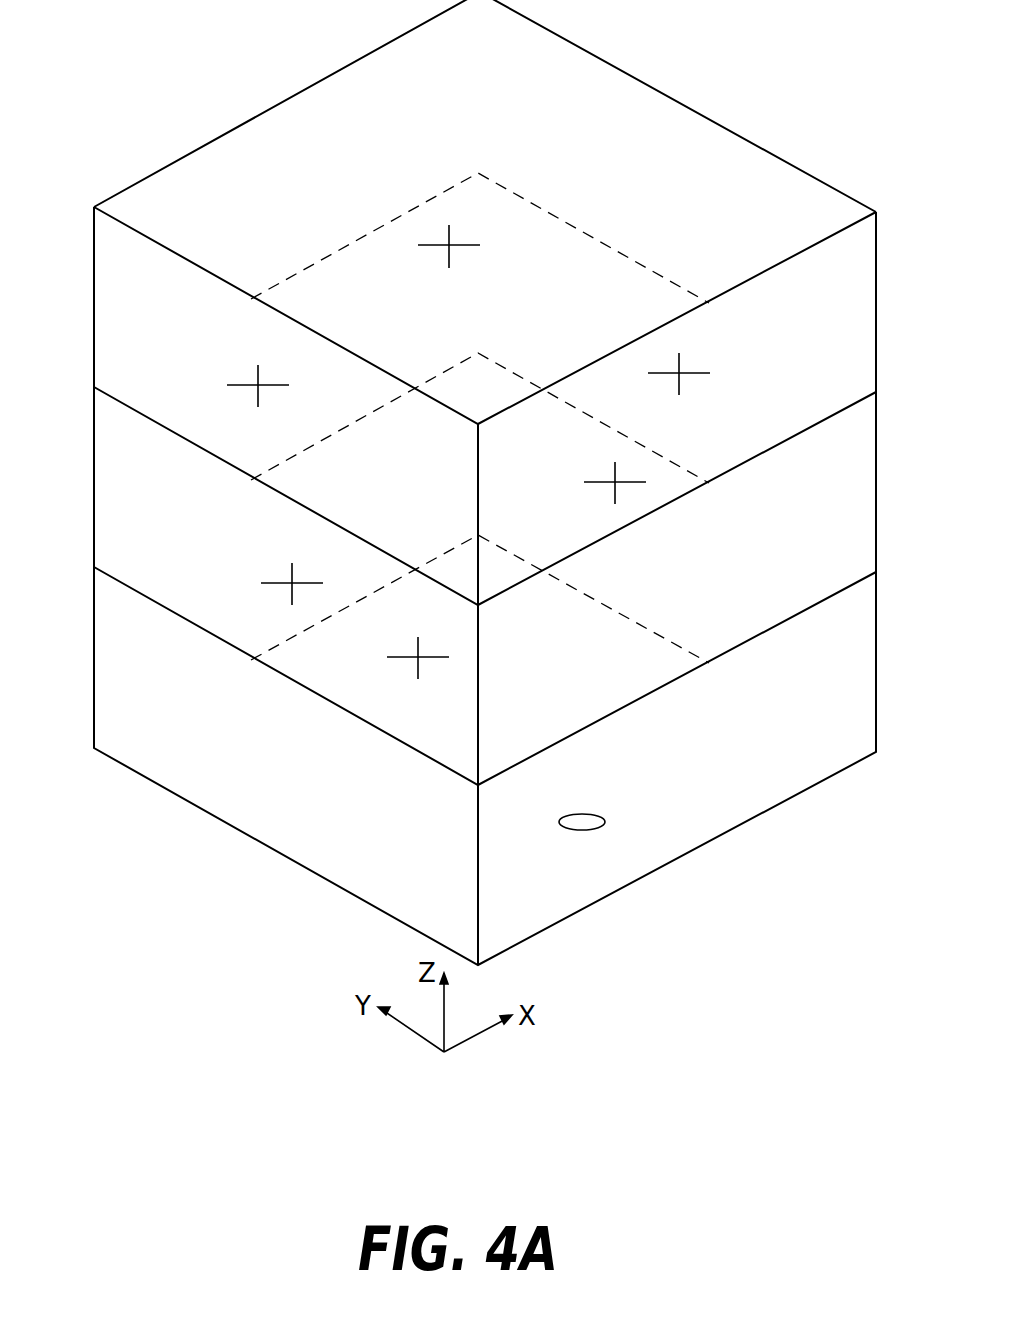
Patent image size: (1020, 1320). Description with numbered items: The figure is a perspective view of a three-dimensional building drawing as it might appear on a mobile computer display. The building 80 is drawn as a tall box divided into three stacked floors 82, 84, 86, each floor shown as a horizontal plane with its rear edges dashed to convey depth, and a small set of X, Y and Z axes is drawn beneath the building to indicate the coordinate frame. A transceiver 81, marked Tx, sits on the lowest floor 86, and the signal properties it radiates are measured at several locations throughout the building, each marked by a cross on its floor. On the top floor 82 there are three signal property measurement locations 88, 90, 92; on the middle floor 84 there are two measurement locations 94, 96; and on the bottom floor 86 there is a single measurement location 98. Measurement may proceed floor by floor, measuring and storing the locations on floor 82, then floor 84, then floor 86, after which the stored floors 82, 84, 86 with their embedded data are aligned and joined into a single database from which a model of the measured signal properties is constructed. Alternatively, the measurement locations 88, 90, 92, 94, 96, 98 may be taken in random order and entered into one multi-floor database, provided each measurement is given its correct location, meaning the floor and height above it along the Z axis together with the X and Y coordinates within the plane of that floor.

The building 80 is at (748, 80).
The transceiver 81 is at (600, 816).
The floor 82 is at (94, 321).
The floor 84 is at (94, 504).
The floor 86 is at (94, 687).
The signal property measurement location 88 is at (449, 245).
The signal property measurement location 90 is at (258, 385).
The signal property measurement location 92 is at (679, 373).
The signal property measurement location 94 is at (615, 482).
The signal property measurement location 96 is at (292, 583).
The signal property measurement location 98 is at (418, 657).